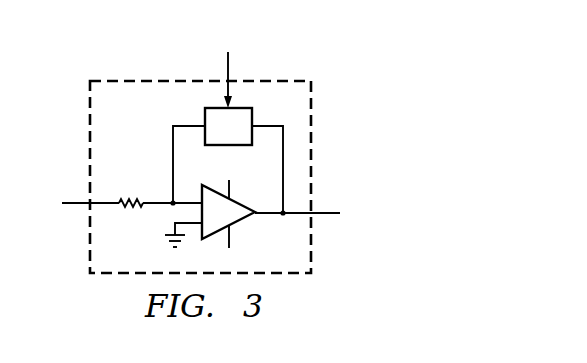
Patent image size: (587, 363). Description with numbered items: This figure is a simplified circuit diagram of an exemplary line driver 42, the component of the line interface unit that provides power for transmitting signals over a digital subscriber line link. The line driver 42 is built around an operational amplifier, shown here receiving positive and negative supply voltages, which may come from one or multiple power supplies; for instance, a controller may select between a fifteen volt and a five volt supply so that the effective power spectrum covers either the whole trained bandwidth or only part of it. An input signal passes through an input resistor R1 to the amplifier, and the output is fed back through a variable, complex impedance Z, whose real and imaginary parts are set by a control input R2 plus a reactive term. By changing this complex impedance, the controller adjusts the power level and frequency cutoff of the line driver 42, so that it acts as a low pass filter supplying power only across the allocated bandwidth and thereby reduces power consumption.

The line driver 42 is at (206, 136).
The input resistor R1 is at (131, 188).
The controllable impedance element Z is at (228, 126).
The control impedance input R2+jl R2 is at (227, 69).